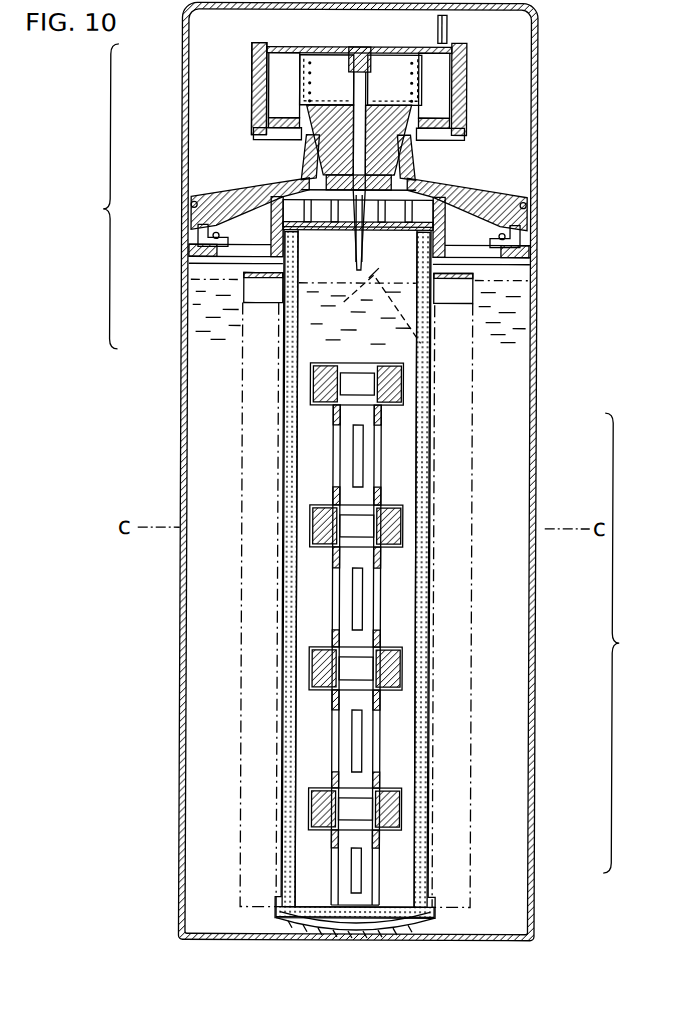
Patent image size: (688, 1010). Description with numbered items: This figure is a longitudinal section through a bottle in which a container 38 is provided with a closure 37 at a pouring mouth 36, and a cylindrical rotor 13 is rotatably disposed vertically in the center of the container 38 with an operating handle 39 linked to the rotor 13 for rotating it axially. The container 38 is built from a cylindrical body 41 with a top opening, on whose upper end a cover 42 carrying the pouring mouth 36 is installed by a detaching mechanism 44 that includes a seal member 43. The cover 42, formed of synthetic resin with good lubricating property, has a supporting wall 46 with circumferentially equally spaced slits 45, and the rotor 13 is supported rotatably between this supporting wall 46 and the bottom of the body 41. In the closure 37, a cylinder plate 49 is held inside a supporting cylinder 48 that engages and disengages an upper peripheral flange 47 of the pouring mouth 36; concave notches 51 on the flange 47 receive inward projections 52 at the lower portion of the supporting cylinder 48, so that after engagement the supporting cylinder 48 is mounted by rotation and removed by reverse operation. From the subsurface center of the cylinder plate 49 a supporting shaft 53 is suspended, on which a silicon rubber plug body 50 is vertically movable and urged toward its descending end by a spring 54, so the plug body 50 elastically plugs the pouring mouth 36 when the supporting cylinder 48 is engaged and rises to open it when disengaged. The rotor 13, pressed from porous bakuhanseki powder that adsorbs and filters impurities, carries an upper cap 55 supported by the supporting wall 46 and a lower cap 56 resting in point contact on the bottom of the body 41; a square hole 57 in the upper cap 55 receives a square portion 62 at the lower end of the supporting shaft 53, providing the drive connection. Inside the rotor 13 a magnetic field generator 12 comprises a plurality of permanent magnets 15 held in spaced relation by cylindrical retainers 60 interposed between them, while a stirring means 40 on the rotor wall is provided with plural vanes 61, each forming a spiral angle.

The magnetic field generator 12 is at (656, 628).
The cylindrical rotor 13 is at (187, 648).
The permanent magnet 15 is at (402, 385).
The pouring mouth 36 is at (305, 140).
The closure 37 is at (240, 72).
The container 38 is at (104, 226).
The operating handle 39 is at (446, 27).
The stirring means 40 is at (474, 300).
The cylindrical body 41 is at (188, 330).
The cover 42 is at (300, 183).
The seal member 43 is at (505, 207).
The detaching mechanism 44 is at (545, 248).
The slits 45 is at (412, 188).
The supporting wall 46 is at (472, 272).
The upper peripheral flange 47 is at (296, 110).
The supporting cylinder 48 is at (466, 46).
The cylinder plate 49 is at (388, 70).
The plug body 50 is at (452, 52).
The concave notches 51 is at (268, 122).
The projections 52 is at (276, 140).
The supporting shaft 53 is at (350, 88).
The spring 54 is at (408, 90).
The upper cap 55 is at (268, 262).
The lower cap 56 is at (300, 922).
The square hole 57 is at (348, 262).
The cylindrical retainers 60 is at (381, 462).
The vanes 61 is at (255, 300).
The square portion 62 is at (430, 340).